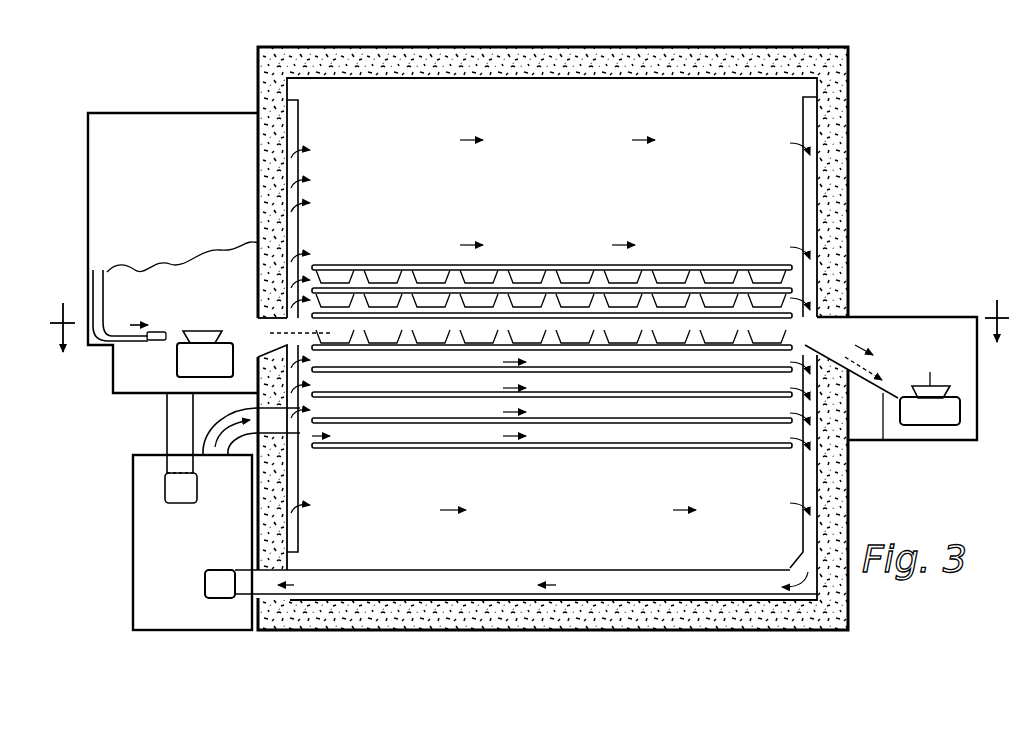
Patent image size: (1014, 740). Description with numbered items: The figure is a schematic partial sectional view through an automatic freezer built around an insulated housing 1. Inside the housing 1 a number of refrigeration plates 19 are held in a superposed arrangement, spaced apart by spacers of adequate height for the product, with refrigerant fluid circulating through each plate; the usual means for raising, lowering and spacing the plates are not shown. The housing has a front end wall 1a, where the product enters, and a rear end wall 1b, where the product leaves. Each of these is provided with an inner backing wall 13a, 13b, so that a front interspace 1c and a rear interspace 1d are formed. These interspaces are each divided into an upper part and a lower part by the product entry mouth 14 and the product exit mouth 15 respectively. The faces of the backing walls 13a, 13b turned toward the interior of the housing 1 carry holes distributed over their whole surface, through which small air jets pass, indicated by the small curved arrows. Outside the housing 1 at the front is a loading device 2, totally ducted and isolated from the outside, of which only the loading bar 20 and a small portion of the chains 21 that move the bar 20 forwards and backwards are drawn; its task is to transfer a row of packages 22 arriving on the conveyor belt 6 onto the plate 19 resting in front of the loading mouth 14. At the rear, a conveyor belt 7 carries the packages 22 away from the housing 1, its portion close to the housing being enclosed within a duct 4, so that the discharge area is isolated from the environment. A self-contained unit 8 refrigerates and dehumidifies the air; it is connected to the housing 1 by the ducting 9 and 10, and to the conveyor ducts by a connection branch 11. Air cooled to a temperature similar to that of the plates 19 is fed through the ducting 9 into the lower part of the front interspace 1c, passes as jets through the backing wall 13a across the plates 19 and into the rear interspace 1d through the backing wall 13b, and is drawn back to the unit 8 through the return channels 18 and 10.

The insulated housing 1 is at (578, 47).
The front end wall 1a is at (275, 88).
The rear end wall 1b is at (832, 96).
The front interspace 1c is at (294, 212).
The rear interspace 1d is at (810, 218).
The loading device 2 is at (114, 135).
The duct 4 is at (972, 440).
The conveyor belt 6 is at (183, 363).
The conveyor belt 7 is at (920, 416).
The self-contained unit 8 is at (153, 610).
The ducting 9 is at (220, 445).
The ducting 10 is at (218, 574).
The connection branch 11 is at (175, 423).
The inner backing wall 13a is at (300, 100).
The inner backing wall 13b is at (803, 113).
The product entry mouth 14 is at (266, 330).
The product exit mouth 15 is at (808, 332).
The ducts 18 is at (630, 598).
The refrigeration plates 19 is at (676, 352).
The loading bar 20 is at (166, 332).
The chains 21 is at (95, 285).
The packages 22 is at (590, 335).